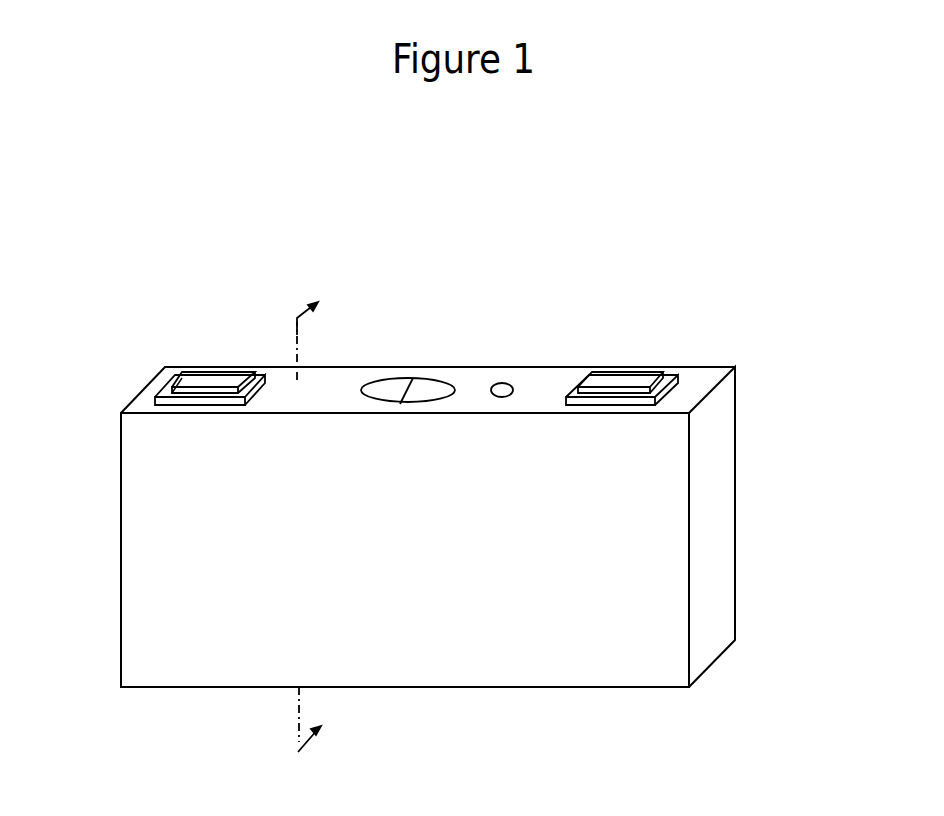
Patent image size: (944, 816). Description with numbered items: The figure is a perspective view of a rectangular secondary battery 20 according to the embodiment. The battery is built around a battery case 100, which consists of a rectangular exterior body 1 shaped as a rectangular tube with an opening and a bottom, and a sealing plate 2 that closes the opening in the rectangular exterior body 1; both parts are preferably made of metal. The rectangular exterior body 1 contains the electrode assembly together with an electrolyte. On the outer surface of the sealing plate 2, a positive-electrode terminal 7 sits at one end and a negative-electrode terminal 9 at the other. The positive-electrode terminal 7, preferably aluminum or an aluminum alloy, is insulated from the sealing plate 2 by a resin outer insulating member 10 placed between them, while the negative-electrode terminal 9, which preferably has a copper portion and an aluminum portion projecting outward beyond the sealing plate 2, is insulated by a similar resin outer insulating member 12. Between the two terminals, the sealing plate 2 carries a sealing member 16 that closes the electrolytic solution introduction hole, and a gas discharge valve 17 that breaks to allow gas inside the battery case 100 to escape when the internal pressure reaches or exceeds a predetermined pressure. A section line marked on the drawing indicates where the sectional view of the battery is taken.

The rectangular exterior body 1 is at (722, 453).
The sealing plate 2 is at (700, 377).
The positive-electrode terminal 7 is at (638, 380).
The negative-electrode terminal 9 is at (222, 383).
The outer insulating member 10 is at (572, 396).
The outer insulating member 12 is at (173, 383).
The sealing member 16 is at (505, 387).
The gas discharge valve 17 is at (423, 387).
The rectangular secondary battery 20 is at (150, 223).
The battery case 100 is at (825, 272).